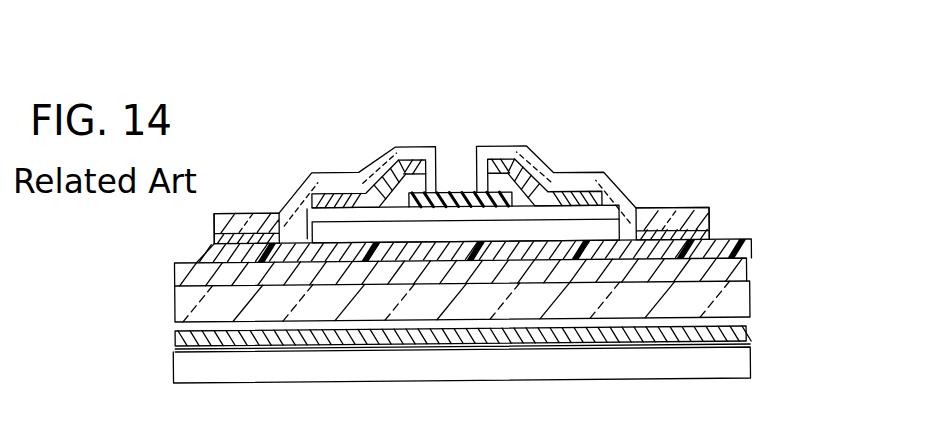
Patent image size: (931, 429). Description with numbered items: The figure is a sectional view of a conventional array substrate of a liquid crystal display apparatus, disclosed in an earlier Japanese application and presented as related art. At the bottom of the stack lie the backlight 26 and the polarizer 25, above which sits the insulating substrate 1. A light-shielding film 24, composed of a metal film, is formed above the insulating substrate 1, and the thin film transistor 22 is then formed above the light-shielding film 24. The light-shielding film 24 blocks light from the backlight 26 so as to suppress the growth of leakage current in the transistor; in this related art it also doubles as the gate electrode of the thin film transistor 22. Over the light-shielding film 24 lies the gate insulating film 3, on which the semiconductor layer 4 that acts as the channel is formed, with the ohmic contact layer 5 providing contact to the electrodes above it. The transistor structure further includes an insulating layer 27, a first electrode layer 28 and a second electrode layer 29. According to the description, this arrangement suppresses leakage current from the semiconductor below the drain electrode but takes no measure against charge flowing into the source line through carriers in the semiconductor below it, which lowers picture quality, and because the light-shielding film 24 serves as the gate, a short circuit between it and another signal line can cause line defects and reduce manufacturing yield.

The insulating substrate 1 is at (735, 306).
The gate insulating film 3 is at (707, 248).
The semiconductor layer 4 is at (490, 224).
The ohmic contact layer 5 is at (337, 223).
The thin film transistor 22 is at (647, 176).
The light-shielding film 24 is at (745, 277).
The polarizer 25 is at (747, 343).
The backlight 26 is at (735, 357).
The insulating layer 27 is at (404, 224).
The first electrode layer 28 is at (284, 246).
The second electrode layer 29 is at (221, 232).